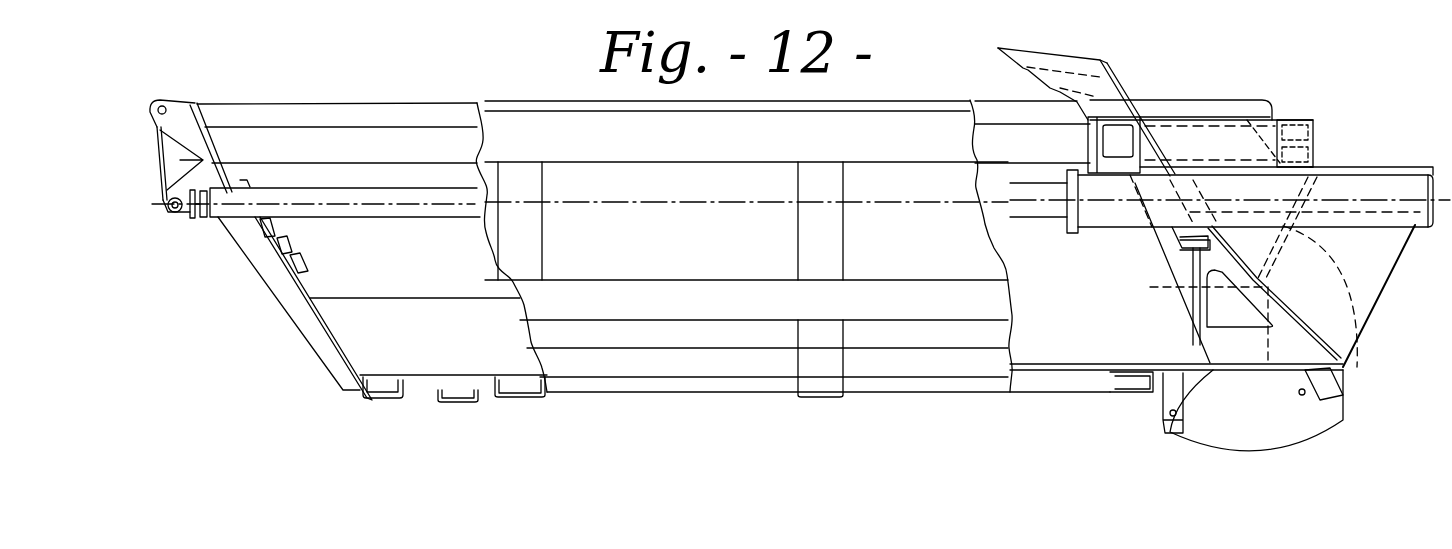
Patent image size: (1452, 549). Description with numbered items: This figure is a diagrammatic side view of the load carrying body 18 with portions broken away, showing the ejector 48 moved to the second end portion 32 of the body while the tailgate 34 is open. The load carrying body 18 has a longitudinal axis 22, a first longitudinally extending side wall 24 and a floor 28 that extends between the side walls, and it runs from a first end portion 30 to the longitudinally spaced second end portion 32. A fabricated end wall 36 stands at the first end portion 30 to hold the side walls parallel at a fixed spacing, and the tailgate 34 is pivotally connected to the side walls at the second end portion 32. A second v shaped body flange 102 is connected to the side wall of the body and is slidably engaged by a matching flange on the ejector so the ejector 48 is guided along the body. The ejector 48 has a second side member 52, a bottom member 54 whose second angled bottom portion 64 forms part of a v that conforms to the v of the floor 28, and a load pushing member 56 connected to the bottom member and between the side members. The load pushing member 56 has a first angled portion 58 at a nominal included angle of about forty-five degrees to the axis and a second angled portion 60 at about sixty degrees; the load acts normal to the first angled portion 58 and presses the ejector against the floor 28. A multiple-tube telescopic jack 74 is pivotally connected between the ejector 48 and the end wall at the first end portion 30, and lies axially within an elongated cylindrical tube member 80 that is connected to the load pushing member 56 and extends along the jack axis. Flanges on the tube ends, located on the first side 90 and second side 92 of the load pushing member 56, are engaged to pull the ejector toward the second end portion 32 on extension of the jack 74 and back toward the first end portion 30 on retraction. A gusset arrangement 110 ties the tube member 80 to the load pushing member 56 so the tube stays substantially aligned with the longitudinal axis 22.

The load carrying body 18 is at (903, 93).
The second v shaped body flange 102 is at (340, 145).
The first longitudinally extending side wall 24 is at (664, 237).
The jack 74 is at (203, 221).
The end wall 36 is at (262, 282).
The first end portion 30 is at (325, 278).
The floor 28 is at (360, 352).
The second side of load pushing member 92 is at (1064, 237).
The longitudinal axis 22 is at (1340, 176).
The ejector 48 is at (1065, 56).
The load pushing member 56 is at (1122, 90).
The second angled portion 60 is at (1153, 143).
The elongated cylindrical tube member 80 is at (1280, 121).
The first side of load pushing member 90 is at (1333, 121).
The second side member 52 is at (1163, 247).
The gusset arrangement 110 is at (1387, 240).
The first angled portion 58 is at (1330, 317).
The second end portion 32 is at (1333, 322).
The bottom member 54 is at (1333, 370).
The tailgate 34 is at (1330, 418).
The second angled bottom portion 64 is at (1163, 392).